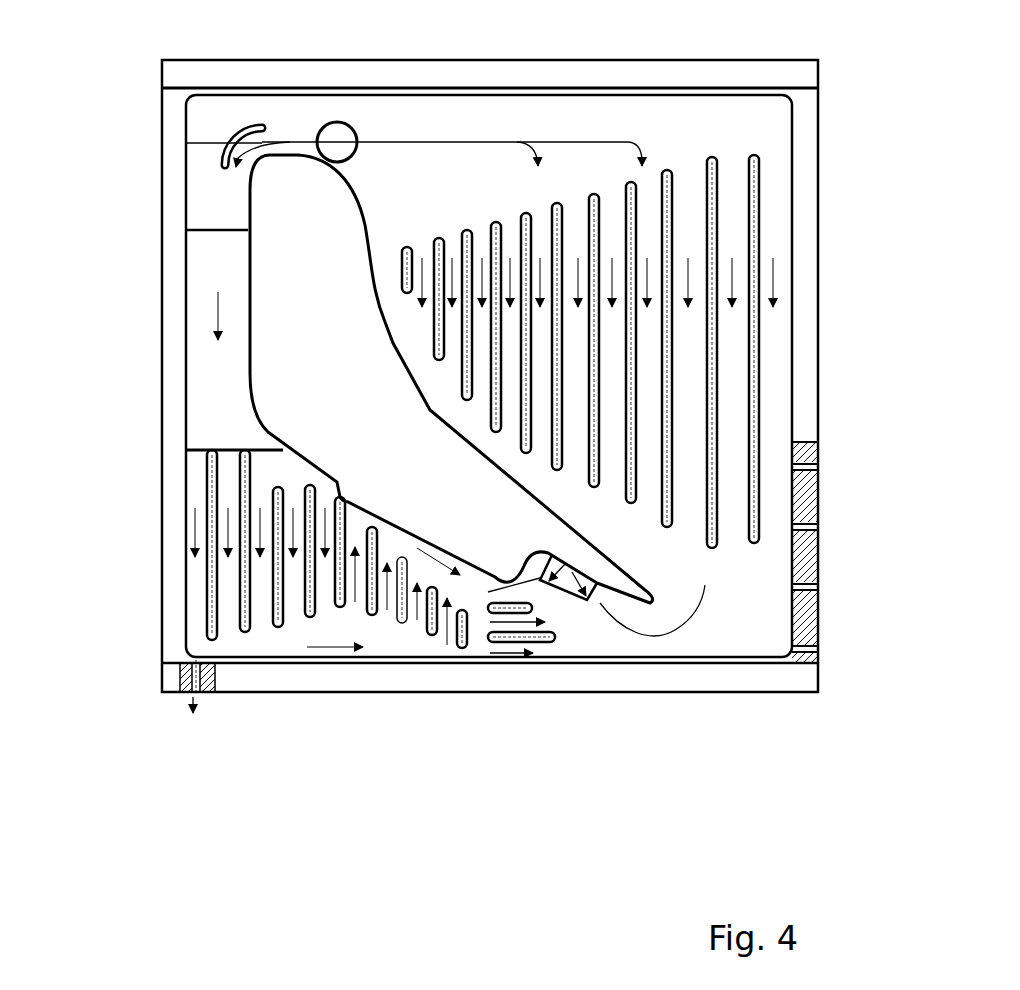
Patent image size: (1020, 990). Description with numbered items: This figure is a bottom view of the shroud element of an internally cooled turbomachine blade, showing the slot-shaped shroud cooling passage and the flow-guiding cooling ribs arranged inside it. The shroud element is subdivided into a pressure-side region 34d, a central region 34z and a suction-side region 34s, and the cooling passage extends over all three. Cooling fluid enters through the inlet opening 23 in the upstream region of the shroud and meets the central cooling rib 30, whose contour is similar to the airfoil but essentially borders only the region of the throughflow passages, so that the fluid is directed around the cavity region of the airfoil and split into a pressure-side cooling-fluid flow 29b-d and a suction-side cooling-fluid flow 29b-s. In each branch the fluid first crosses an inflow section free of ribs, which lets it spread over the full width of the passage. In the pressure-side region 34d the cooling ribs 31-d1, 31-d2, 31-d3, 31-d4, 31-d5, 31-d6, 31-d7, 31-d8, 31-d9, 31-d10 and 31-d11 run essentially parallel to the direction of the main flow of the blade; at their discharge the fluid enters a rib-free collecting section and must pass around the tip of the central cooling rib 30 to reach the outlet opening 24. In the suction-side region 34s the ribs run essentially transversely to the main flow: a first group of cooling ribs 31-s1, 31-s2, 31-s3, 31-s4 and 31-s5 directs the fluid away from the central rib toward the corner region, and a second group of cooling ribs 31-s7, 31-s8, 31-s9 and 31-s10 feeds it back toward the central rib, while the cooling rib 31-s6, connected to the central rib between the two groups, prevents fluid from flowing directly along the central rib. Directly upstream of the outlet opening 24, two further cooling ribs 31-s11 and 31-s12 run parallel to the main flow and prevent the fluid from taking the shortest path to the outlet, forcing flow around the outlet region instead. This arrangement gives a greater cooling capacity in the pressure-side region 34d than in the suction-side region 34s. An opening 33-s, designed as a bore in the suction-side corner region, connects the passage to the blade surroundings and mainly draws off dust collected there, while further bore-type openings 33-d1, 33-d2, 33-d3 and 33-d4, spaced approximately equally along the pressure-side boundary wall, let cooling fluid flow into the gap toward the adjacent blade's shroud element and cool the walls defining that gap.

The inlet opening 23 is at (336, 126).
The outlet opening 24 is at (560, 555).
The cooling-fluid flow (suction-side branch) 29b-s is at (297, 138).
The cooling-fluid flow (pressure-side branch) 29b-d is at (452, 138).
The central cooling rib 30 is at (318, 242).
The cooling rib 31-s1 is at (187, 143).
The cooling rib 31-s2 is at (205, 477).
The cooling rib 31-s3 is at (240, 514).
The cooling rib 31-s4 is at (273, 563).
The cooling rib 31-s5 is at (305, 601).
The cooling rib 31-s6 is at (338, 609).
The cooling rib 31-s7 is at (370, 617).
The cooling rib 31-s8 is at (401, 625).
The cooling rib 31-s9 is at (431, 637).
The cooling rib 31-s10 is at (461, 650).
The cooling rib 31-s11 is at (489, 614).
The cooling rib 31-s12 is at (540, 643).
The cooling rib 31-d1 is at (401, 294).
The cooling rib 31-d2 is at (435, 362).
The cooling rib 31-d3 is at (464, 402).
The cooling rib 31-d4 is at (493, 434).
The cooling rib 31-d5 is at (522, 455).
The cooling rib 31-d6 is at (555, 473).
The cooling rib 31-d7 is at (593, 192).
The cooling rib 31-d8 is at (631, 505).
The cooling rib 31-d9 is at (667, 168).
The cooling rib 31-d10 is at (712, 550).
The cooling rib 31-d11 is at (754, 152).
The opening 33-s is at (192, 700).
The opening 33-d1 is at (823, 647).
The opening 33-d2 is at (823, 586).
The opening 33-d3 is at (823, 526).
The opening 33-d4 is at (823, 466).
The pressure-side region 34d is at (499, 180).
The suction-side region 34s is at (212, 398).
The central region 34z is at (283, 282).